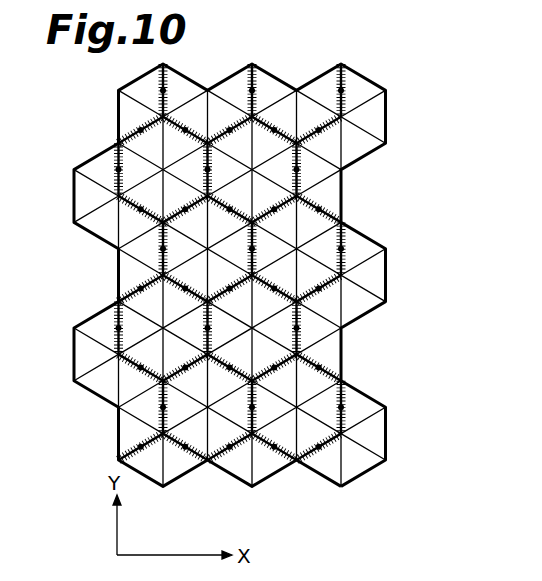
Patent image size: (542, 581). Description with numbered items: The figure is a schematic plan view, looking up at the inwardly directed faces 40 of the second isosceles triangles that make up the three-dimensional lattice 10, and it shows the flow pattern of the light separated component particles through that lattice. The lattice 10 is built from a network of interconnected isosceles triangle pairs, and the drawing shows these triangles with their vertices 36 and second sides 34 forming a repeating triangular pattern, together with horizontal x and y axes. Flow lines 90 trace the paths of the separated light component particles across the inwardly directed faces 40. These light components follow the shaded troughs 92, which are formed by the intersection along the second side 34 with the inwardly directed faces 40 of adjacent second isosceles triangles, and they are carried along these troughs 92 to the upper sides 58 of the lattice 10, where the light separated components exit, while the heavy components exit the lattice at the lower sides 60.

The three-dimensional lattice 10 is at (298, 68).
The second side 34 is at (75, 356).
The vertex 36 is at (118, 197).
The inwardly directed face 40 is at (108, 165).
The upper sides 58 is at (256, 61).
The lower sides 60 is at (255, 489).
The flow lines 90 is at (117, 290).
The troughs 92 is at (157, 95).